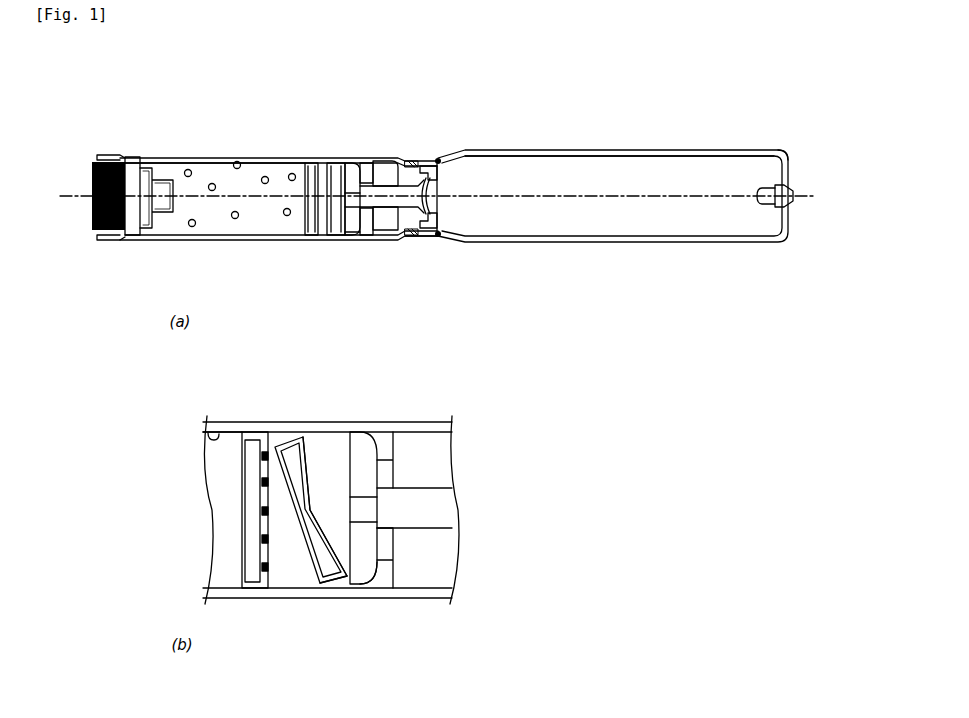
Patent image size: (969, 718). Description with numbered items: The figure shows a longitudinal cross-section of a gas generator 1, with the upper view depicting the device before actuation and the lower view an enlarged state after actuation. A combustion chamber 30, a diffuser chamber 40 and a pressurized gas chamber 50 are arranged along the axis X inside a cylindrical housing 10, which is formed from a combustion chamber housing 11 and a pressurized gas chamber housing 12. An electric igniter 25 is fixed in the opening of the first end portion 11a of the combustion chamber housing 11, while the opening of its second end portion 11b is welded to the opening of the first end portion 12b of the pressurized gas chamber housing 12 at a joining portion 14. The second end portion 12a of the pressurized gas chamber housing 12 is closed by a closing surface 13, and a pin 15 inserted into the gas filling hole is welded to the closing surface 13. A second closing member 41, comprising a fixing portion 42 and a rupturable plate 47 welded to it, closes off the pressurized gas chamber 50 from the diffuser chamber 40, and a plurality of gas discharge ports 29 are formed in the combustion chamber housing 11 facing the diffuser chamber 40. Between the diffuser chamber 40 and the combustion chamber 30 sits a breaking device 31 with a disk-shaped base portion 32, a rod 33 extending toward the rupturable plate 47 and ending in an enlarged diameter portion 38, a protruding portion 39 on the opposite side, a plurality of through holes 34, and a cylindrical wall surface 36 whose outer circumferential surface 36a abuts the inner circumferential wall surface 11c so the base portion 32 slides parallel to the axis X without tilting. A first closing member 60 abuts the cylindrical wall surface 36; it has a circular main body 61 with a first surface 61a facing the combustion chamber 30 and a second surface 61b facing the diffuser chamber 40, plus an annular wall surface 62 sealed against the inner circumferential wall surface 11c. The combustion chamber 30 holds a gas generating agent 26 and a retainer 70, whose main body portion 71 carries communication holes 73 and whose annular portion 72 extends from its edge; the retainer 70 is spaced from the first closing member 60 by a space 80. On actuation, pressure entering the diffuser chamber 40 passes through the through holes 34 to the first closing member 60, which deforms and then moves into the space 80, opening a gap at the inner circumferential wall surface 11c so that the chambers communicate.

The gas generator 1 is at (636, 140).
The cylindrical housing 10 is at (423, 88).
The combustion chamber housing 11 is at (333, 160).
The first end portion 11a is at (97, 241).
The second end portion 11b is at (427, 239).
The inner circumferential wall surface 11c is at (207, 162).
The pressurized gas chamber housing 12 is at (510, 150).
The second end portion 12a is at (786, 156).
The first end portion 12b is at (441, 244).
The closing surface 13 is at (780, 212).
The joining portion 14 is at (438, 156).
The pin 15 is at (794, 188).
The electric igniter 25 is at (136, 172).
The gas generating agent 26 is at (235, 161).
The gas discharge ports 29 is at (415, 159).
The combustion chamber 30 is at (240, 165).
The breaking device 31 is at (373, 292).
The base portion 32 is at (357, 236).
The rod 33 is at (392, 203).
The through holes 34 is at (366, 162).
The cylindrical wall surface 36 is at (356, 164).
The outer circumferential surface 36a is at (377, 582).
The enlarged diameter portion 38 is at (423, 214).
The protruding portion 39 is at (336, 198).
The diffuser chamber 40 is at (398, 180).
The second closing member 41 is at (474, 196).
The fixing portion 42 is at (432, 172).
The rupturable plate 47 is at (433, 205).
The pressurized gas chamber 50 is at (641, 180).
The first closing member 60 is at (308, 402).
The circular main body 61 is at (332, 216).
The first surface 61a is at (322, 578).
The second surface 61b is at (306, 452).
The annular wall surface 62 is at (338, 233).
The retainer 70 is at (313, 168).
The main body portion 71 is at (258, 525).
The annular portion 72 is at (250, 589).
The communication holes 73 is at (271, 508).
The space 80 is at (327, 163).
The axis X is at (447, 198).